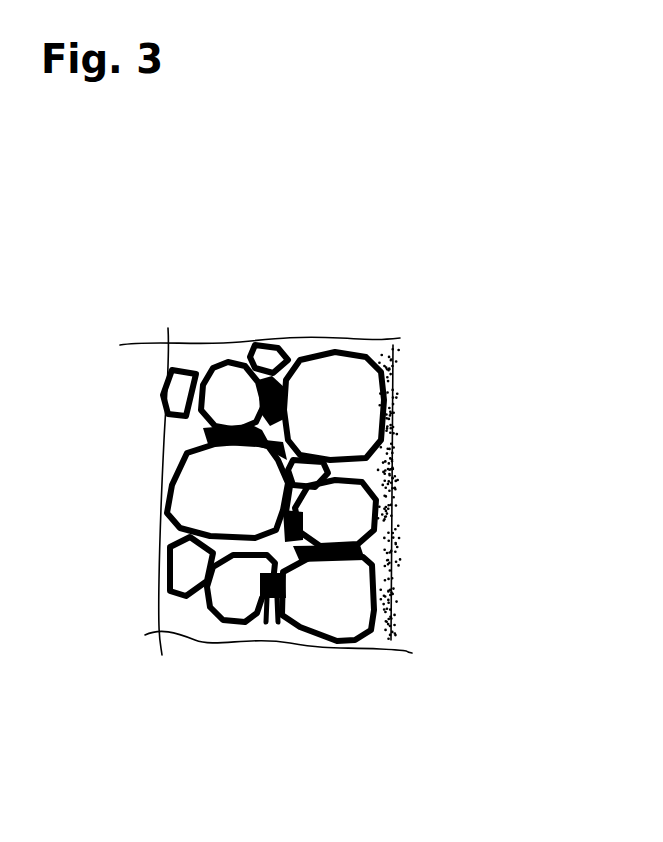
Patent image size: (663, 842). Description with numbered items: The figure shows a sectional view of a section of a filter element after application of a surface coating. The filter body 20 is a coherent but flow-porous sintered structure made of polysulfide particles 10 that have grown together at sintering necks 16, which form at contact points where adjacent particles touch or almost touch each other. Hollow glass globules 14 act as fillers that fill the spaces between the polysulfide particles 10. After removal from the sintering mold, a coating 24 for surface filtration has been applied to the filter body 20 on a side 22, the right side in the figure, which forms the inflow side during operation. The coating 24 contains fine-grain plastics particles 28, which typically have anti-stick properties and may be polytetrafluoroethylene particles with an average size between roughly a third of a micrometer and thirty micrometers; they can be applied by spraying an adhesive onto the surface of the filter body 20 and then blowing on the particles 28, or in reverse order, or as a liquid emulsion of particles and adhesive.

The polysulfide particles 10 is at (218, 392).
The hollow glass globules 14 is at (168, 583).
The sintering necks 16 is at (210, 433).
The filter body 20 is at (276, 312).
The side 22 is at (548, 445).
The coating 24 is at (393, 330).
The plastics particles 28 is at (383, 487).